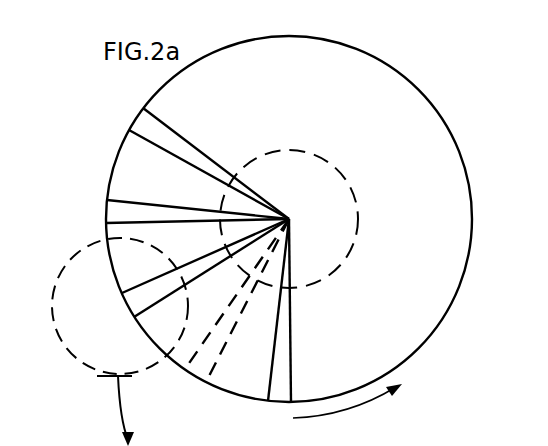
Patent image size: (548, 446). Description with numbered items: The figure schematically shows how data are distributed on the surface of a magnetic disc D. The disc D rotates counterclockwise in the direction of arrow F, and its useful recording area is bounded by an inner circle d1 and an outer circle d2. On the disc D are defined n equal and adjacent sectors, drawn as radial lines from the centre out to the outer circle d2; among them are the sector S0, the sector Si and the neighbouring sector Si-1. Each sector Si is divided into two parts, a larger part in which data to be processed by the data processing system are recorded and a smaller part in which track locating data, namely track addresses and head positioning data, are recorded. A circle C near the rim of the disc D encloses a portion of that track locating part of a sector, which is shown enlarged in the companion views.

The outer circle d2 is at (289, 219).
The inner circle d1 is at (300, 151).
The disc D is at (426, 230).
The sector Si is at (108, 230).
The sector Si-1 is at (180, 364).
The sector S0 is at (233, 395).
The circle C is at (100, 378).
The arrow F is at (347, 415).